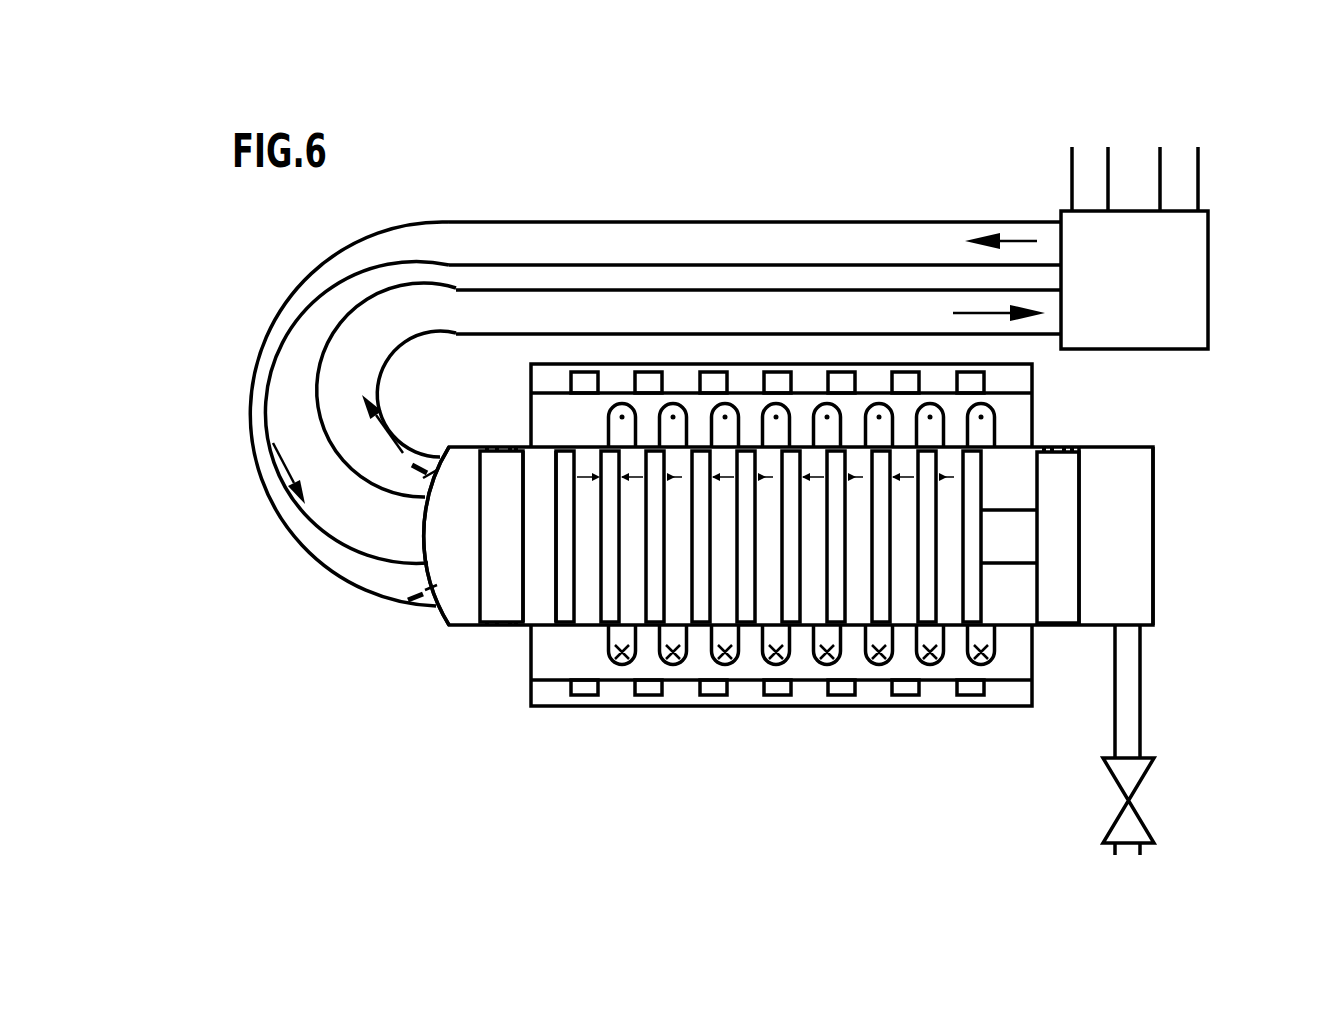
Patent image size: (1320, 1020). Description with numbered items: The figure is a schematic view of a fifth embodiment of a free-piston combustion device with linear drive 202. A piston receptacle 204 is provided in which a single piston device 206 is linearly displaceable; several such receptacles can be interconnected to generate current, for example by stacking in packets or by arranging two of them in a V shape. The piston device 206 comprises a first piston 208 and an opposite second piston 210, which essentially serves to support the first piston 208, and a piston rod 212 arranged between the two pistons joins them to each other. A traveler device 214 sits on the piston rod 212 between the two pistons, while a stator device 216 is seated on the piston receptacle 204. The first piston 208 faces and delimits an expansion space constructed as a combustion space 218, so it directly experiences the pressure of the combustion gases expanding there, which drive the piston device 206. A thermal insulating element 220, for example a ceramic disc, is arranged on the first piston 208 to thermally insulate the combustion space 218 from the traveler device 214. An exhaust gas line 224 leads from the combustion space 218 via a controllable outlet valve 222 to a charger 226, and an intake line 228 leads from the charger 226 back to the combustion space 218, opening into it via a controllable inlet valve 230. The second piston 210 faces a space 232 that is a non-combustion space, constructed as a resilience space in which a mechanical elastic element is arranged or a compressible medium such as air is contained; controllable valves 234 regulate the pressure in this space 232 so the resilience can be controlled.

The free-piston combustion device with linear drive 202 is at (243, 328).
The piston receptacle 204 is at (456, 630).
The piston device 206 is at (498, 400).
The first piston 208 is at (513, 593).
The second piston 210 is at (1063, 605).
The piston rod 212 is at (995, 533).
The traveler device 214 is at (815, 606).
The stator device 216 is at (683, 677).
The combustion space 218 is at (458, 598).
The thermal insulating element 220 is at (540, 470).
The controllable outlet valve 222 is at (428, 492).
The exhaust gas line 224 is at (703, 308).
The charger 226 is at (1185, 276).
The intake line 228 is at (802, 250).
The controllable inlet valve 230 is at (425, 586).
The space 232 is at (1138, 465).
The controllable valves 234 is at (1160, 782).